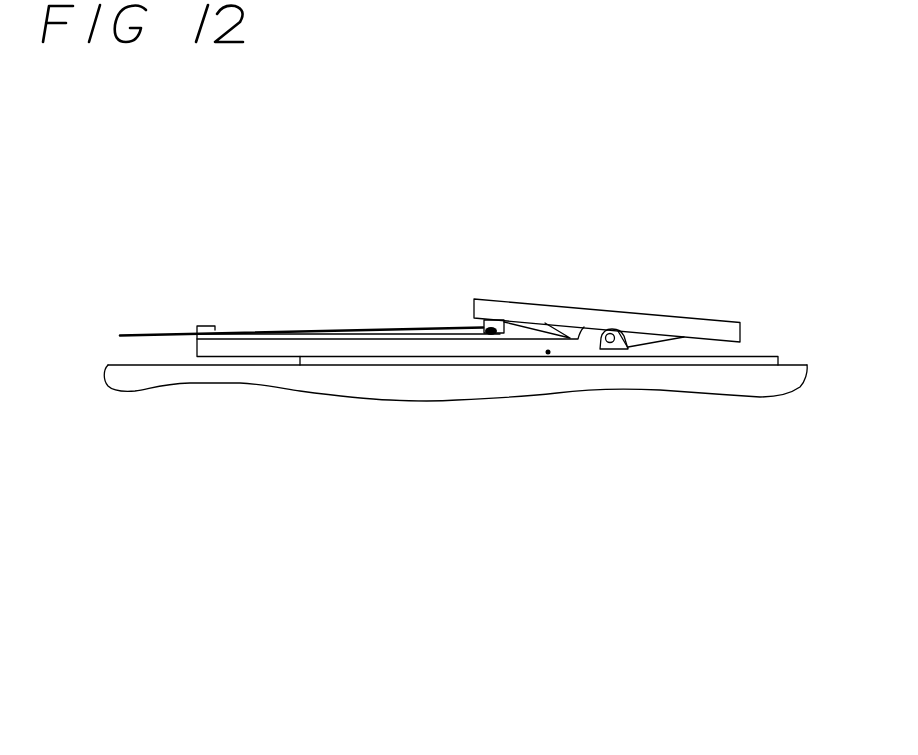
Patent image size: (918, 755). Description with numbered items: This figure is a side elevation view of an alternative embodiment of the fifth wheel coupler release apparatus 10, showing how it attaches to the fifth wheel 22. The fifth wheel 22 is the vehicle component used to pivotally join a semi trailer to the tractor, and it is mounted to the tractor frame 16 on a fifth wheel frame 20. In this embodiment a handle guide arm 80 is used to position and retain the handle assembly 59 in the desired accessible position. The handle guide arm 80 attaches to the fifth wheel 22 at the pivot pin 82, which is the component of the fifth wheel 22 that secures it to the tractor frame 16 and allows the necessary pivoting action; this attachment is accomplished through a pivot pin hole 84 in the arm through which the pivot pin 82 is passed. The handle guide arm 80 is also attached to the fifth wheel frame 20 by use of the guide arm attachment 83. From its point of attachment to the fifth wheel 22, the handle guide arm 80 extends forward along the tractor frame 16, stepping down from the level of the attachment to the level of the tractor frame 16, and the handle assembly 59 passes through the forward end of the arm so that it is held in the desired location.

The fifth wheel coupler release apparatus 10 is at (170, 308).
The tractor frame 16 is at (178, 384).
The fifth wheel frame 20 is at (424, 366).
The fifth wheel 22 is at (610, 303).
The handle assembly 59 is at (356, 328).
The handle guide arm 80 is at (267, 366).
The pivot pin 82 is at (609, 343).
The guide arm attachment 83 is at (547, 355).
The pivot pin hole 84 is at (616, 344).